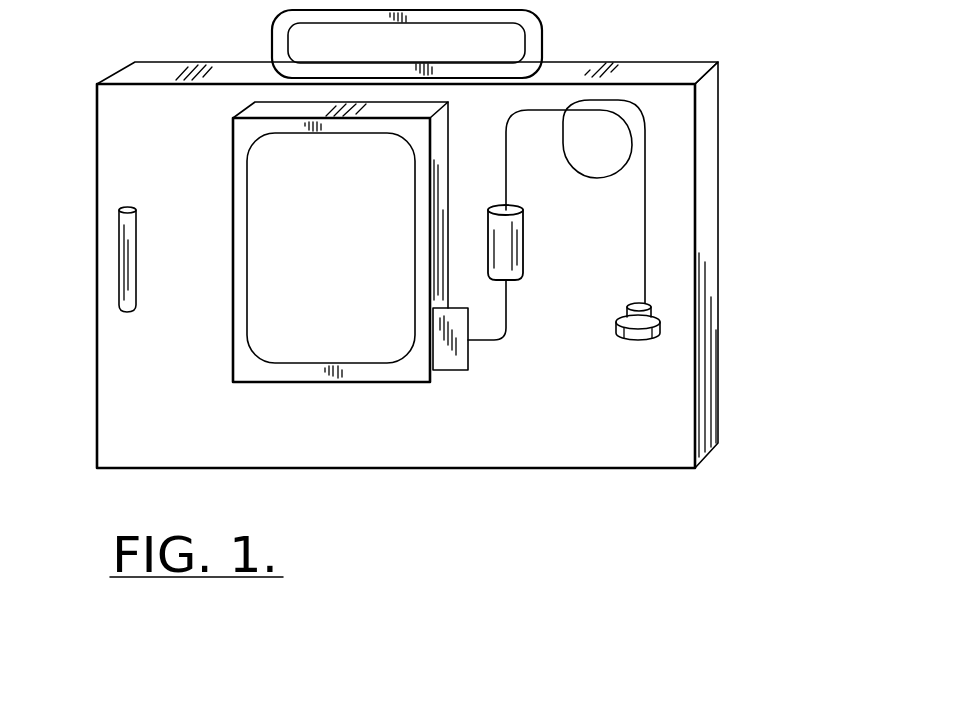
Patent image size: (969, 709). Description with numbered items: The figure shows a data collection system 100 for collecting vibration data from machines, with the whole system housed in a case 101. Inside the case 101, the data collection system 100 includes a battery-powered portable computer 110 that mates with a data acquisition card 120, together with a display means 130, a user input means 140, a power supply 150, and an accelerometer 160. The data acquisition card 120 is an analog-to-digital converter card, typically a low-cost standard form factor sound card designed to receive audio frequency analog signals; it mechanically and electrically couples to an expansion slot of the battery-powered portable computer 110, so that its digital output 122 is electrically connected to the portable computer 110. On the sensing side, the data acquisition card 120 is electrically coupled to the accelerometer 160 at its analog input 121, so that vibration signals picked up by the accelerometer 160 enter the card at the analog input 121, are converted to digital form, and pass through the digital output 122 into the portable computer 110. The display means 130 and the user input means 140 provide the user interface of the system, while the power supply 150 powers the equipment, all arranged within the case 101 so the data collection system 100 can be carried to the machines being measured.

The data collection system 100 is at (407, 290).
The case 101 is at (543, 39).
The battery-powered portable computer 110 is at (266, 203).
The data acquisition card 120 is at (564, 316).
The analog input 121 is at (611, 415).
The digital output 122 is at (514, 431).
The display means 130 is at (296, 187).
The user input means 140 is at (89, 259).
The power supply 150 is at (644, 362).
The accelerometer 160 is at (743, 350).